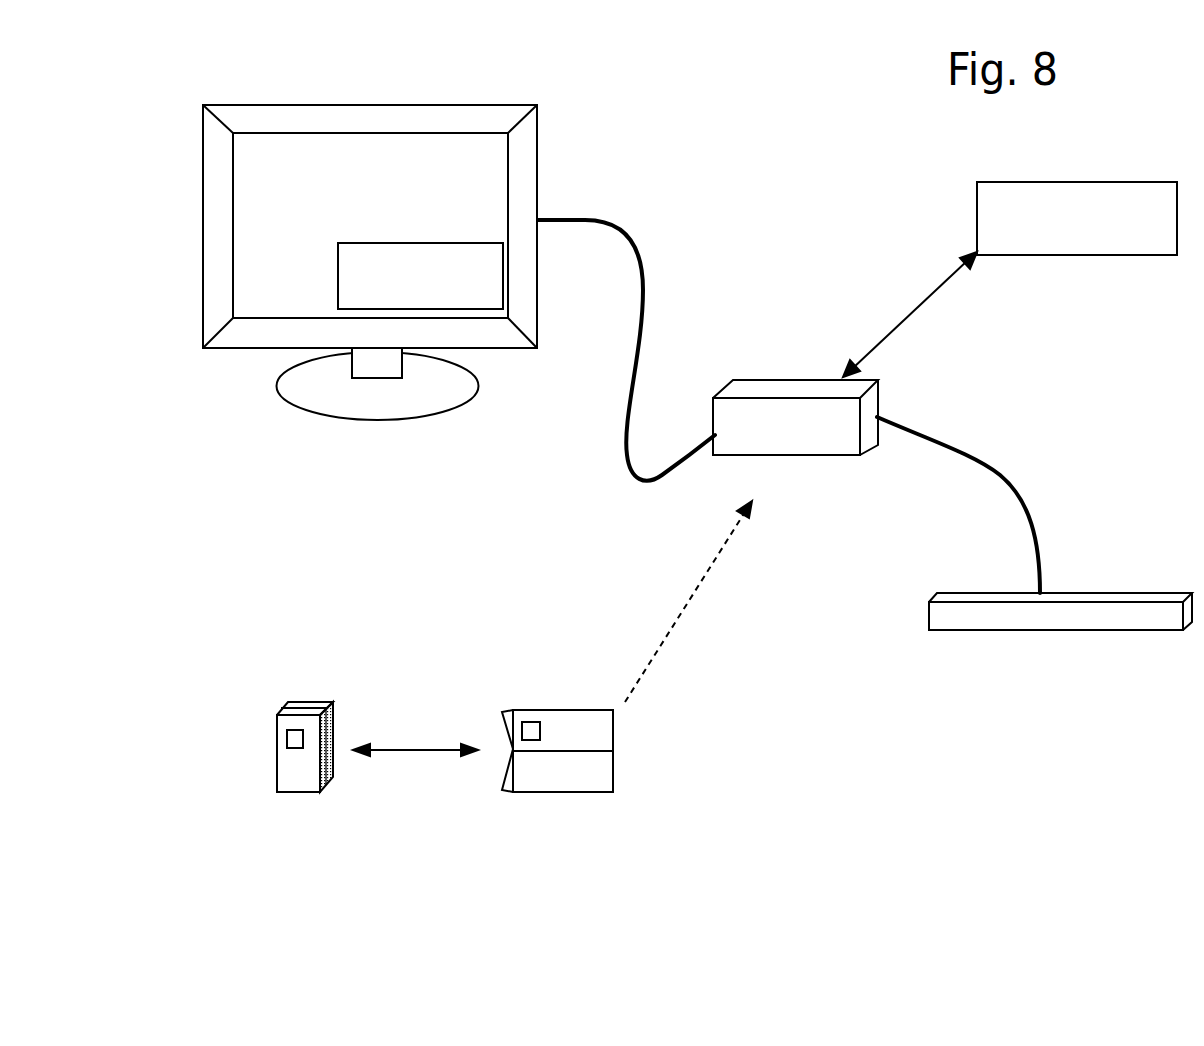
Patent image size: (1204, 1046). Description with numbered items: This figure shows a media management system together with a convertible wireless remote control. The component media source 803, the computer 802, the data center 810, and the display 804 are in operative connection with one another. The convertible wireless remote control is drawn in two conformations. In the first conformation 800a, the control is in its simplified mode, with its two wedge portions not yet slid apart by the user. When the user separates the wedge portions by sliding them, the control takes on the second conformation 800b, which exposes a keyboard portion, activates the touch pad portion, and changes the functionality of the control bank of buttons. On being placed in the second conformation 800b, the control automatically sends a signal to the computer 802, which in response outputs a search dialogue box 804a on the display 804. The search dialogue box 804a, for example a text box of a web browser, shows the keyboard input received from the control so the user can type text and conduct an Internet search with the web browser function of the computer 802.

The display 804 is at (370, 262).
The search dialogue box 804a is at (327, 285).
The computer 802 is at (884, 410).
The data center 810 is at (1077, 218).
The component media source 803 is at (925, 632).
The first conformation 800a is at (303, 700).
The second conformation 800b is at (540, 702).